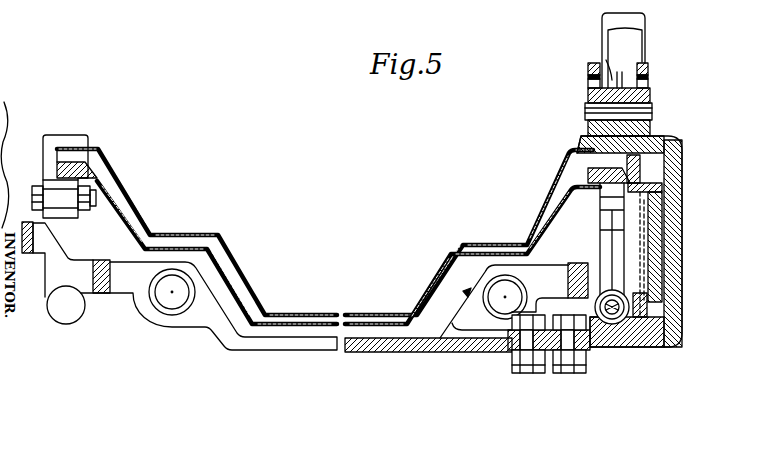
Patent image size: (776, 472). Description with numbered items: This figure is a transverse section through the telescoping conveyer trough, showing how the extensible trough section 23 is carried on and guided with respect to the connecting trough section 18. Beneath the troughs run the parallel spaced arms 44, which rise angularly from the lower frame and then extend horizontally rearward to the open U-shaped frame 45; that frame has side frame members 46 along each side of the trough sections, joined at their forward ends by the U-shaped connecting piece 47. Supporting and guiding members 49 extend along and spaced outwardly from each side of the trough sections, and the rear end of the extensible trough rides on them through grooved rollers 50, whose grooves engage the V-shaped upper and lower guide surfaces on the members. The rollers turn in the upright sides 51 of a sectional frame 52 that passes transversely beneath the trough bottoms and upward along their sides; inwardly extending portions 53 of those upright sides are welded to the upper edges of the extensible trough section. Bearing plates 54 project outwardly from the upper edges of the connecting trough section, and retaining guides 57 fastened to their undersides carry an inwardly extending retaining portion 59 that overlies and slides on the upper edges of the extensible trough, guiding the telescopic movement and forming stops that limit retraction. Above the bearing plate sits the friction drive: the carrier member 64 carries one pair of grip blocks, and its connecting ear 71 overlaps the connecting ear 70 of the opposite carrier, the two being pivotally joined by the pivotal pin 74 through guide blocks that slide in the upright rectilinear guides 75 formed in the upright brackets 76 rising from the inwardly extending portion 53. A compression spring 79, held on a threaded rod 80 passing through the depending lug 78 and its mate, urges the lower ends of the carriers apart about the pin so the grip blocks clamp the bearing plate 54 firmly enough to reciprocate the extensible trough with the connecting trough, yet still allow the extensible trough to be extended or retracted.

The connecting trough section 18 is at (549, 200).
The extensible trough section 23 is at (533, 226).
The arms 44 is at (181, 290).
The frame 45 is at (452, 270).
The side frame members 46 is at (133, 247).
The connecting piece 47 is at (293, 346).
The supporting and guiding members 49 is at (648, 222).
The grooved rollers 50 is at (668, 140).
The upright sides 51 is at (684, 162).
The frame 52 is at (408, 350).
The inwardly extending portions 53 is at (578, 142).
The bearing plates 54 is at (68, 162).
The retaining guides 57 is at (70, 220).
The retaining portion 59 is at (88, 134).
The carrier member 64 is at (638, 41).
The connecting ear 70 is at (640, 63).
The connecting ear 71 is at (606, 60).
The pivotal pin 74 is at (650, 107).
The upright rectilinear guides 75 is at (590, 88).
The upright brackets 76 is at (589, 68).
The depending lug 78 is at (640, 282).
The compression spring 79 is at (618, 322).
The threaded rod 80 is at (615, 318).